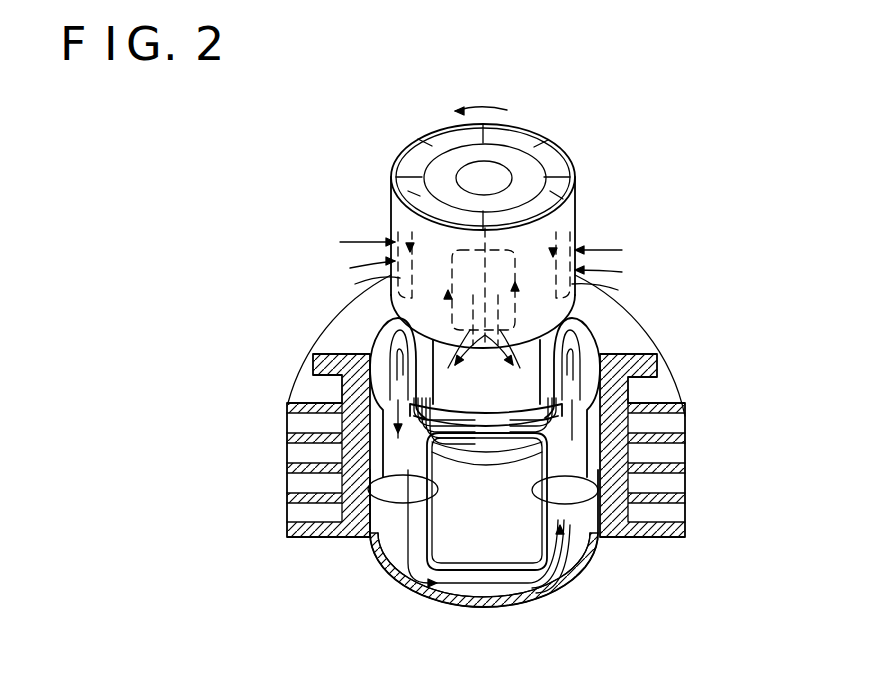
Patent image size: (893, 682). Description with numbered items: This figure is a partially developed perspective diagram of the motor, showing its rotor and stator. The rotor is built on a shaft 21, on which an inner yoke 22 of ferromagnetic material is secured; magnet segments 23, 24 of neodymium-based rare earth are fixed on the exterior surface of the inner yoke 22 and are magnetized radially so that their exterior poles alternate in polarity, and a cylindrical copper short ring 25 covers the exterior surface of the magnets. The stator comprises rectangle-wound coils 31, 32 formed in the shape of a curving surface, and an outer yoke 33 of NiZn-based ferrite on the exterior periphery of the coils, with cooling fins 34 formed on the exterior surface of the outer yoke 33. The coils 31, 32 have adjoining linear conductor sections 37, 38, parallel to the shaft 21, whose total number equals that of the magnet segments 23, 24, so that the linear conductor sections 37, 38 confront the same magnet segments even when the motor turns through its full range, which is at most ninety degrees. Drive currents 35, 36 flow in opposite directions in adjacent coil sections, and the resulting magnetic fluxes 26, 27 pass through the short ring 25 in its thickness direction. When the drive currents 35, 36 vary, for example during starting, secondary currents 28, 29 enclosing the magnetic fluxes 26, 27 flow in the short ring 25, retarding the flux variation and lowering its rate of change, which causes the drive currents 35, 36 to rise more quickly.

The shaft 21 is at (560, 142).
The inner yoke 22 is at (420, 138).
The magnet segment 23 is at (432, 158).
The magnet segment 24 is at (393, 178).
The short ring 25 is at (498, 173).
The magnetic flux 26 is at (369, 240).
The magnetic flux 27 is at (393, 306).
The secondary current 28 is at (392, 221).
The secondary current 29 is at (387, 305).
The coil 31 is at (440, 462).
The coil 32 is at (390, 572).
The outer yoke 33 is at (590, 341).
The cooling fins 34 is at (676, 395).
The drive current 35 is at (490, 455).
The drive current 36 is at (382, 552).
The linear conductor section 37 is at (625, 345).
The linear conductor section 38 is at (378, 322).